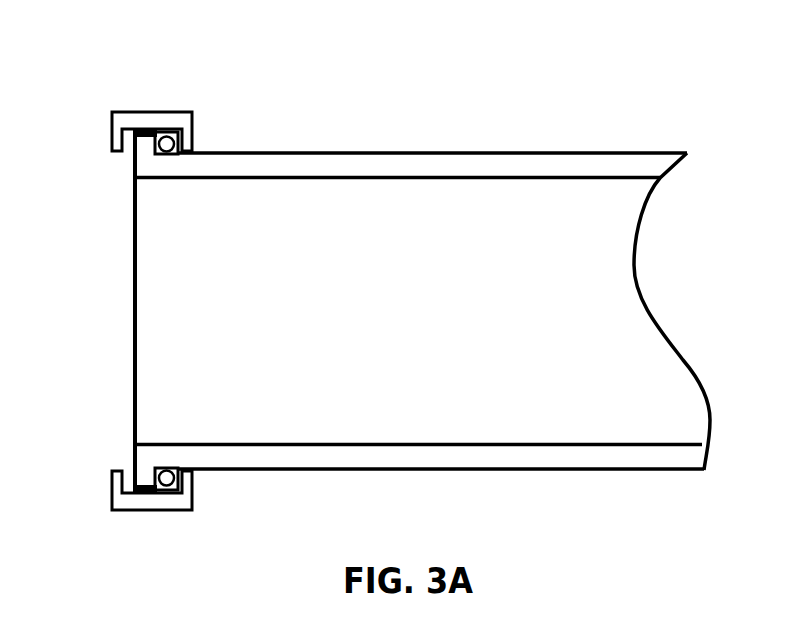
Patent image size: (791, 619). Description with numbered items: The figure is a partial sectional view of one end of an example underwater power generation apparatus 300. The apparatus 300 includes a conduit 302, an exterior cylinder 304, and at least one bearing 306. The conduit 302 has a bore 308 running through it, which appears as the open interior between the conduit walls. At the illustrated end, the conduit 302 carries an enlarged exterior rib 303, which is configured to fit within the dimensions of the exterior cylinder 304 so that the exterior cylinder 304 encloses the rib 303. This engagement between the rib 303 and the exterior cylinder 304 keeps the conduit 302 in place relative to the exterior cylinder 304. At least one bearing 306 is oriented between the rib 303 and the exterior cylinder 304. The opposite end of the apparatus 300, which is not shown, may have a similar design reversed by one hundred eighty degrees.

The underwater power generation apparatus 300 is at (461, 104).
The conduit 302 is at (587, 163).
The enlarged exterior rib 303 is at (143, 142).
The exterior cylinder 304 is at (186, 126).
The bearing 306 is at (168, 149).
The bore 308 is at (218, 387).